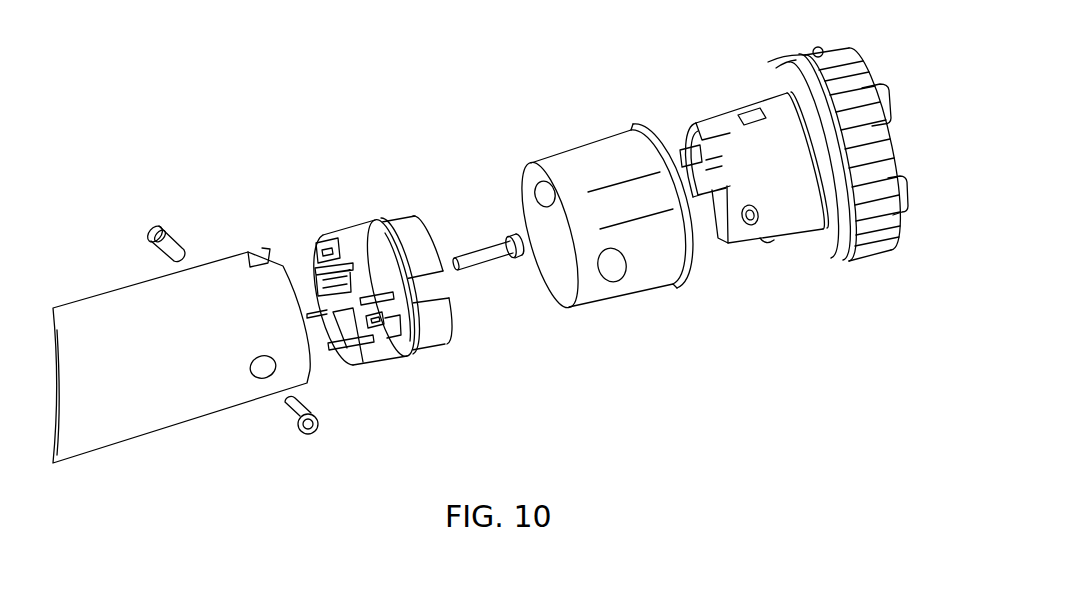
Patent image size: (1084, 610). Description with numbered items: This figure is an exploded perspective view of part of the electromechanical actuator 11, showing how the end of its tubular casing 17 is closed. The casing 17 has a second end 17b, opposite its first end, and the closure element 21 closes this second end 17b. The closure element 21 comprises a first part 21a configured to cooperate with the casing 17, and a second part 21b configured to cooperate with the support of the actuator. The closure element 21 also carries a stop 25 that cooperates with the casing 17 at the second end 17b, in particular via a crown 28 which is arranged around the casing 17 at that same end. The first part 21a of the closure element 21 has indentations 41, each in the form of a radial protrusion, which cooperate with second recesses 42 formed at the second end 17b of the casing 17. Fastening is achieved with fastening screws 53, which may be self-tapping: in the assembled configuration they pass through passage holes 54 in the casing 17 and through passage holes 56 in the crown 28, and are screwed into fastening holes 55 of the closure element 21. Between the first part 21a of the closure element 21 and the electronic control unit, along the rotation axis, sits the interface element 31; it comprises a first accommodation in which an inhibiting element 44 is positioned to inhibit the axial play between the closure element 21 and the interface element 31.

The electromechanical actuator 11 is at (283, 112).
The casing 17 is at (96, 302).
The second end 17b is at (310, 372).
The closure element 21 is at (860, 150).
The first part 21a is at (725, 118).
The second part 21b is at (868, 233).
The stop 25 is at (829, 250).
The crown 28 is at (573, 162).
The interface element 31 is at (357, 233).
The indentations 41 is at (746, 116).
The second recesses 42 is at (256, 254).
The inhibiting element 44 is at (487, 256).
The fastening screws 53 is at (153, 228).
The passage holes 54 is at (256, 368).
The fastening holes 55 is at (747, 225).
The passage holes 56 is at (542, 190).